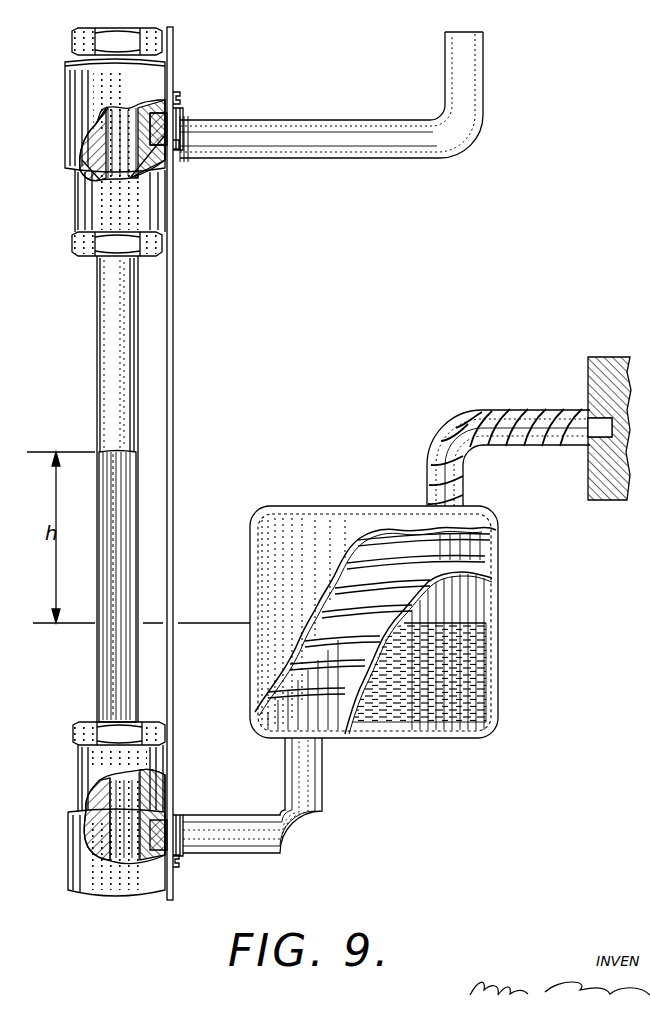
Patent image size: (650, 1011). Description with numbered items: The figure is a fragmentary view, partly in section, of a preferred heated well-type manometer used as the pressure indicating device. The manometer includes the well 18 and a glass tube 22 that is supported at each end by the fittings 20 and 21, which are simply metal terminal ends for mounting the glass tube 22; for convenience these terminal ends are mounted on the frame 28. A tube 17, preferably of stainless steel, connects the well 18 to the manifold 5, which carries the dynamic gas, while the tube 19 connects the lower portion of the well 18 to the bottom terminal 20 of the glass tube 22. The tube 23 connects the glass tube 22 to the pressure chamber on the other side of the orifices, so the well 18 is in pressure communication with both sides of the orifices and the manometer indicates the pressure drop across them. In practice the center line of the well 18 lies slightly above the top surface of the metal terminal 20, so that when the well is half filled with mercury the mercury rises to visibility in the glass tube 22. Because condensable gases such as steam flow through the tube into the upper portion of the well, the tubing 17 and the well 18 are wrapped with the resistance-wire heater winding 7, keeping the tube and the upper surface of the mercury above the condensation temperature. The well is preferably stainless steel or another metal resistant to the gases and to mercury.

The manifold 5 is at (606, 357).
The resistance-wire winding 7 is at (455, 418).
The tube 17 is at (525, 425).
The well 18 is at (350, 517).
The tube 19 is at (290, 815).
The fitting 20 is at (75, 832).
The fitting 21 is at (85, 96).
The glass tube 22 is at (113, 341).
The tube 23 is at (260, 140).
The frame 28 is at (172, 332).